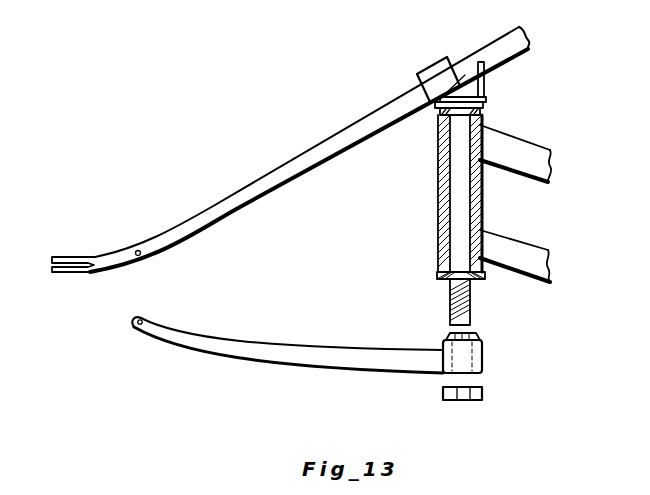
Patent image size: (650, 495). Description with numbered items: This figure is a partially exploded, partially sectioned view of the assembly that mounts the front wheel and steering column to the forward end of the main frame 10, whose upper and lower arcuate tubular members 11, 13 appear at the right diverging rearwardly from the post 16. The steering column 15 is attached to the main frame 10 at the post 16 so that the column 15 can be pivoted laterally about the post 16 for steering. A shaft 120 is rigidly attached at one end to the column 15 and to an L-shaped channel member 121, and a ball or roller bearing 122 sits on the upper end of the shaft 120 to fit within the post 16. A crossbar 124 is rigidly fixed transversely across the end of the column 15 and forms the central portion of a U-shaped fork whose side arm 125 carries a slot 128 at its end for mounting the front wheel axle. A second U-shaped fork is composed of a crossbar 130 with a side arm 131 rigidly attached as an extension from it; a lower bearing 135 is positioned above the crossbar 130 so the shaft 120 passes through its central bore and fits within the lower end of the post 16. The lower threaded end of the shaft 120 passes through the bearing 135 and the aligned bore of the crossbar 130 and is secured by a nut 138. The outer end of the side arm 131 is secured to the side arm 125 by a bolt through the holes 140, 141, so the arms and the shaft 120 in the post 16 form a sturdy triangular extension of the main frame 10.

The main frame 10 is at (583, 190).
The upper arcuate tubular member 11 is at (553, 172).
The lower arcuate tubular member 13 is at (544, 249).
The column 15 is at (516, 42).
The post 16 is at (484, 206).
The shaft 120 is at (458, 284).
The L-shaped channel member 121 is at (488, 91).
The ball or roller bearing 122 is at (490, 110).
The crossbar 124 is at (434, 70).
The side arm 125 is at (330, 138).
The slot 128 is at (52, 265).
The crossbar 130 is at (484, 360).
The side arm 131 is at (300, 362).
The bearing 135 is at (478, 340).
The nut 138 is at (485, 393).
The hole 140 is at (143, 232).
The hole 141 is at (134, 328).